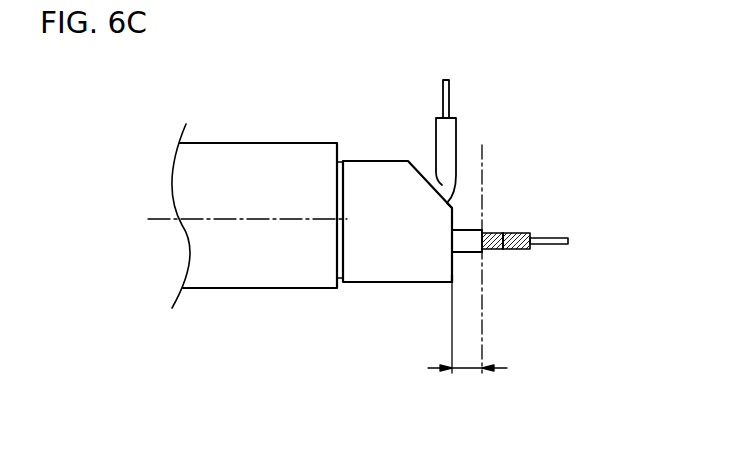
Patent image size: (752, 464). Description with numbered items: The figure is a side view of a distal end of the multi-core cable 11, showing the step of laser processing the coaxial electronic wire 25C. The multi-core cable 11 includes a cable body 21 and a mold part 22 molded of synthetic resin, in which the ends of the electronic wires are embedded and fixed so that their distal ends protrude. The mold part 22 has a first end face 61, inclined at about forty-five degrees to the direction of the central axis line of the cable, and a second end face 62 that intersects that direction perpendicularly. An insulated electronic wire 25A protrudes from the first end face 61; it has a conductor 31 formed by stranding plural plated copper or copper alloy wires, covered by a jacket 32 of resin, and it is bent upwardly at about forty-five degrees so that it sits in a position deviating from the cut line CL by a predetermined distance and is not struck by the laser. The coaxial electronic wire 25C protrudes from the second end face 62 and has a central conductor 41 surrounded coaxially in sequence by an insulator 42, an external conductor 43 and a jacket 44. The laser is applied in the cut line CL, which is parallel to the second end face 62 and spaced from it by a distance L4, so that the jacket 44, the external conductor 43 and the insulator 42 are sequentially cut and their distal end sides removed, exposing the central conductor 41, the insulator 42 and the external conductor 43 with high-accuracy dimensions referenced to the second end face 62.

The multi-core cable 11 is at (278, 112).
The cable body 21 is at (252, 290).
The mold part 22 is at (382, 284).
The insulated electronic wire 25A is at (435, 128).
The coaxial electronic wire 25C is at (521, 225).
The conductor 31 is at (449, 88).
The jacket 32 is at (441, 181).
The central conductor 41 is at (553, 239).
The insulator 42 is at (520, 250).
The external conductor 43 is at (493, 250).
The jacket 44 is at (468, 231).
The first end face 61 is at (450, 203).
The second end face 62 is at (452, 270).
The cut line CL is at (482, 330).
The distance L4 is at (467, 340).